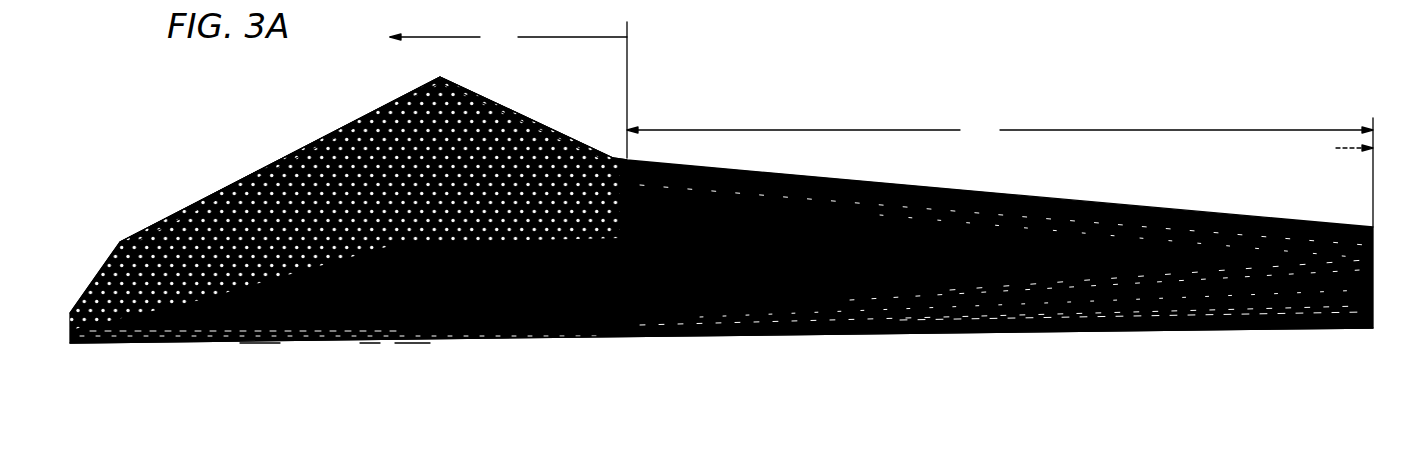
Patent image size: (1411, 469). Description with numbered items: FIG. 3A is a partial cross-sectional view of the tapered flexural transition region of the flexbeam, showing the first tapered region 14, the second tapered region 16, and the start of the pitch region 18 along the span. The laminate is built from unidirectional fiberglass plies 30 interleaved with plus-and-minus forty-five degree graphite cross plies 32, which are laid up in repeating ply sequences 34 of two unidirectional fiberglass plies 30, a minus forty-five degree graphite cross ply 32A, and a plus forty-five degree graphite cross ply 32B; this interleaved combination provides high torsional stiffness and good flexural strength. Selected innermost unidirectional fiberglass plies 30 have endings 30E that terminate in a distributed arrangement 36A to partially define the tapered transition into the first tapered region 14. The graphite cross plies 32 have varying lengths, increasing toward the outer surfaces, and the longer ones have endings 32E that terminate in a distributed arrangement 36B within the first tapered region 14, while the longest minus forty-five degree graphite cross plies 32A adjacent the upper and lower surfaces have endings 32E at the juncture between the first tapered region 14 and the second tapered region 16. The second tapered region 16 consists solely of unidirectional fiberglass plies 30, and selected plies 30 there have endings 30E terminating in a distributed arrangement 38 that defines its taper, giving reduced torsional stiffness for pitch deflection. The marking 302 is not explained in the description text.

The first tapered region 14 is at (508, 90).
The second tapered region 16 is at (1000, 172).
The pitch region 18 is at (1343, 147).
The unidirectional fiberglass plies 30 is at (307, 343).
The endings 30E is at (108, 343).
The ±45° graphite cross plies 32 is at (230, 410).
The −45° graphite cross ply 32A is at (532, 118).
The +45° graphite cross ply 32B is at (540, 122).
The endings 32E is at (665, 163).
The ply sequences 34 is at (242, 172).
The distributed arrangement 36A is at (258, 343).
The distributed arrangement 36B is at (410, 343).
The distributed arrangement 38 is at (998, 325).
The section line 302 is at (638, 4).